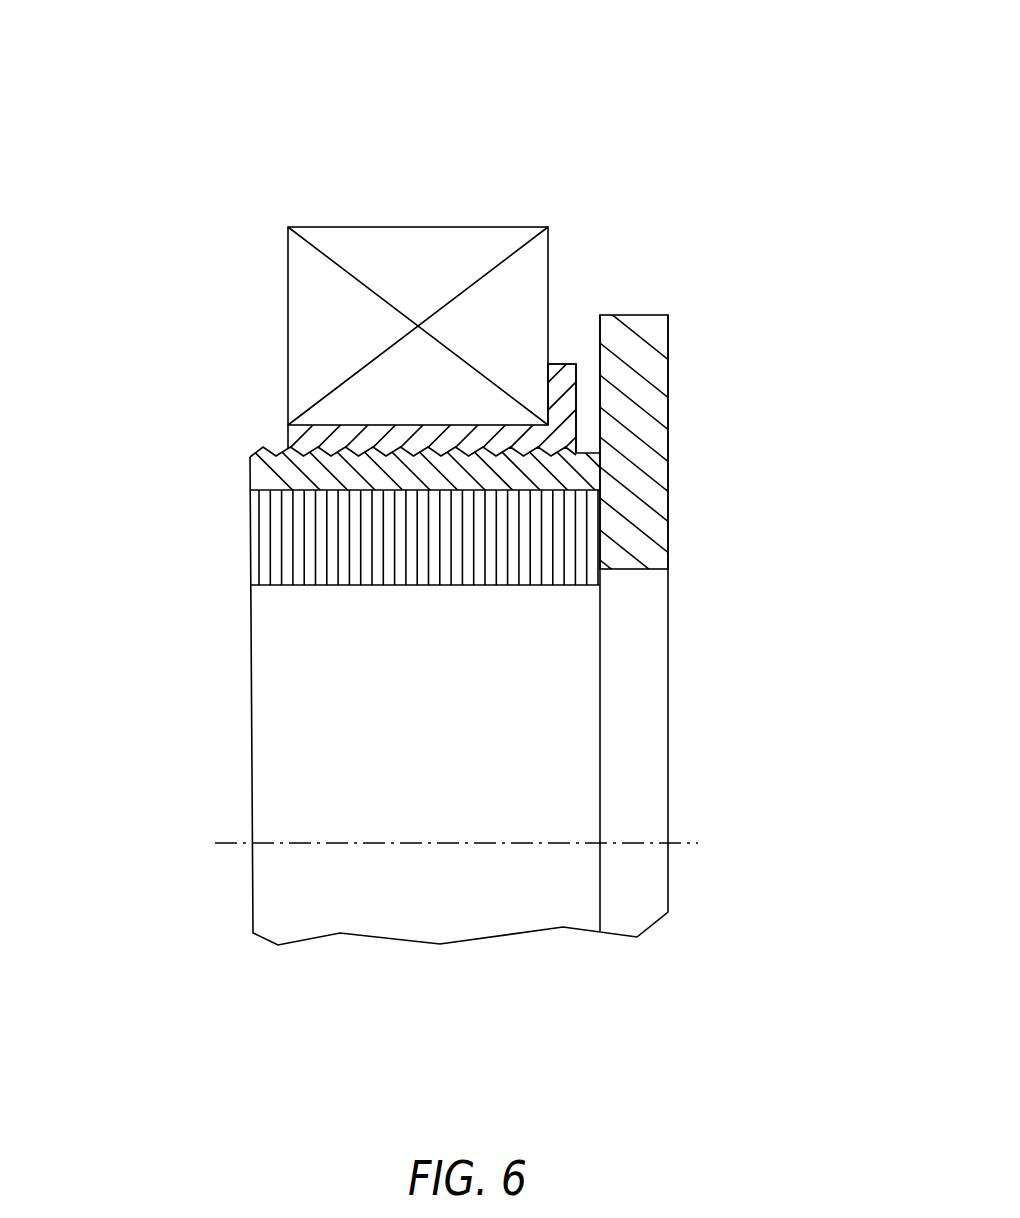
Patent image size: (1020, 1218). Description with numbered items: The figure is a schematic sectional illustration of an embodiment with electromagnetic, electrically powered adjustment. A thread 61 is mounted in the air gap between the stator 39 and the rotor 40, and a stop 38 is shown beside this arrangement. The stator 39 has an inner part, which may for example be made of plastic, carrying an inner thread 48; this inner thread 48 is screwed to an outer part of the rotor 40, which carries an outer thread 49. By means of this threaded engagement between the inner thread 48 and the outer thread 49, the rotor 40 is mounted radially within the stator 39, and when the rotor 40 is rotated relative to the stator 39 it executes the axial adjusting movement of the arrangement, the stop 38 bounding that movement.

The stop 38 is at (650, 337).
The stator 39 is at (447, 282).
The rotor 40 is at (305, 557).
The inner thread 48 is at (565, 417).
The outer thread 49 is at (265, 465).
The thread 61 is at (345, 450).